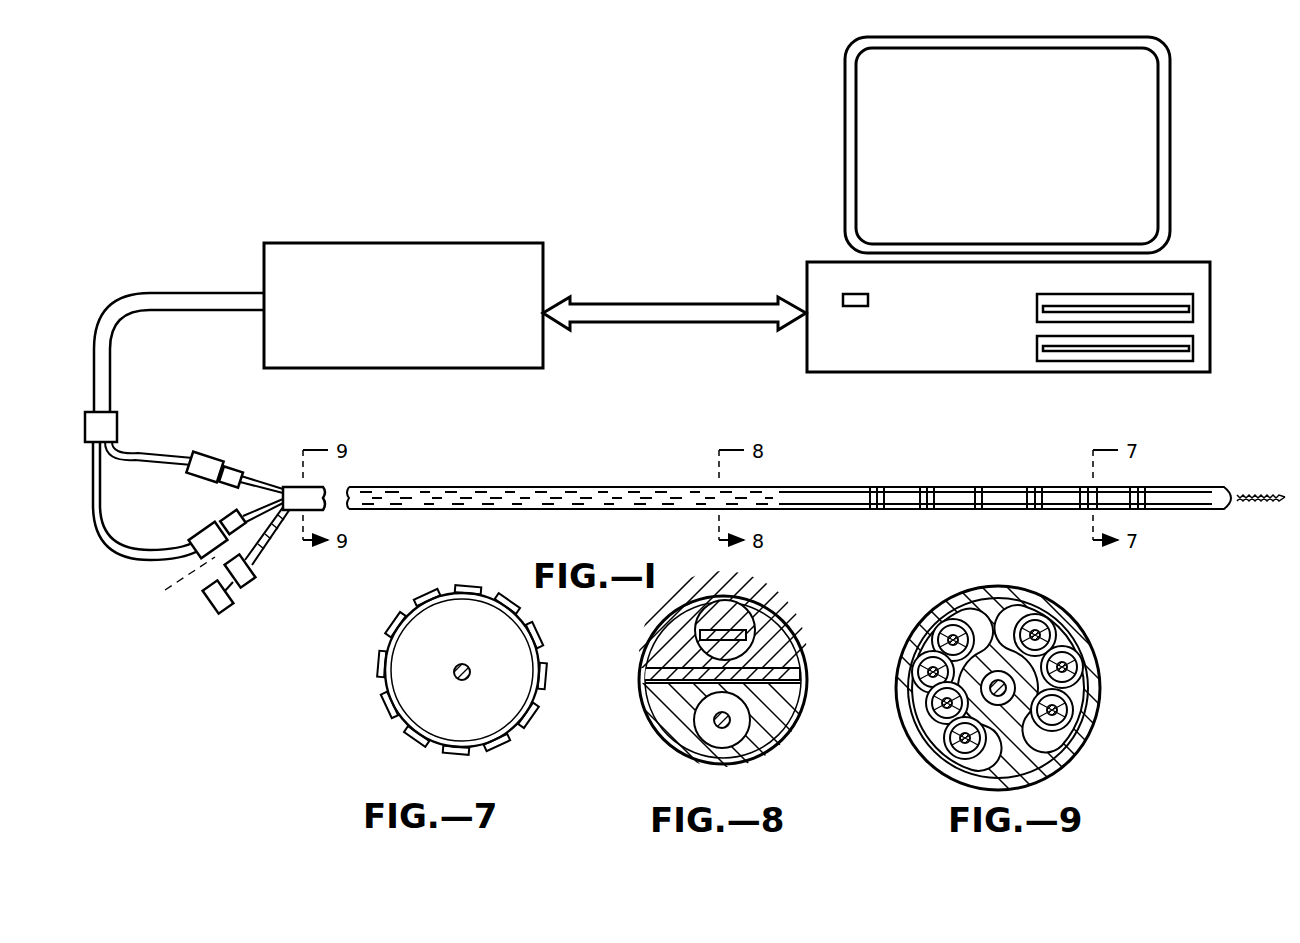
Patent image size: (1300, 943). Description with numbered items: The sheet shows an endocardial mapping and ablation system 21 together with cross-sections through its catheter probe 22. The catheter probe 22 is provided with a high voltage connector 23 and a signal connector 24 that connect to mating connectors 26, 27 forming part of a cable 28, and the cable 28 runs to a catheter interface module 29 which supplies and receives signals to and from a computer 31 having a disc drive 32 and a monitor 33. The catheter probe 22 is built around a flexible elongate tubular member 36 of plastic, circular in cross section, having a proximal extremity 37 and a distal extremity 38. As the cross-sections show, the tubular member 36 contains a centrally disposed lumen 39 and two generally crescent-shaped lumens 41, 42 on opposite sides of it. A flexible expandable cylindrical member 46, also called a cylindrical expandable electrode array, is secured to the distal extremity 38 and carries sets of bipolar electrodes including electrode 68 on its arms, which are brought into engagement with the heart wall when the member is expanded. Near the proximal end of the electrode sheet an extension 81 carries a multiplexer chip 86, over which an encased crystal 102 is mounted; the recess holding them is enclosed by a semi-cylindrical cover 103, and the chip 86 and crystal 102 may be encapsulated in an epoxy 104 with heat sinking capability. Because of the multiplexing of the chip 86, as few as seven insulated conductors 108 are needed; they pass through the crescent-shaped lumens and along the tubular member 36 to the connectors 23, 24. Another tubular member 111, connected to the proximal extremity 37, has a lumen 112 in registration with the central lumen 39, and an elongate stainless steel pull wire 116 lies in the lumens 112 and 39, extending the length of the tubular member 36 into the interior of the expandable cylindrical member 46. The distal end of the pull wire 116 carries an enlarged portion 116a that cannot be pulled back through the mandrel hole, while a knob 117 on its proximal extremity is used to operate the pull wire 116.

In FIG. 1, the endocardial mapping and ablation system 21 is at (388, 128).
In FIG. 1, the catheter probe 22 is at (789, 433).
In FIG. 1, the high voltage connector 23 is at (228, 470).
In FIG. 1, the signal connector 24 is at (222, 518).
In FIG. 1, the mating connector 26 is at (205, 458).
In FIG. 1, the mating connector 27 is at (200, 530).
In FIG. 1, the cable 28 is at (106, 370).
In FIG. 1, the catheter interface module 29 is at (295, 258).
In FIG. 1, the computer 31 is at (782, 97).
In FIG. 1, the disc drive 32 is at (1197, 282).
In FIG. 1, the monitor 33 is at (1145, 105).
In FIG. 1, the flexible elongate tubular member 36 is at (367, 483).
In FIG. 1, the proximal extremity 37 is at (297, 485).
In FIG. 9, the proximal extremity 37 is at (978, 592).
In FIG. 1, the distal extremity 38 is at (682, 487).
In FIG. 8, the central lumen 39 is at (694, 716).
In FIG. 9, the central lumen 39 is at (1015, 688).
In FIG. 8, the crescent-shaped lumen 41 is at (723, 680).
In FIG. 9, the crescent-shaped lumen 41 is at (915, 705).
In FIG. 9, the crescent-shaped lumen 42 is at (1068, 642).
In FIG. 1, the flexible expandable cylindrical member 46 is at (925, 486).
In FIG. 7, the bipolar electrode 68 is at (442, 596).
In FIG. 8, the extension 81 is at (800, 683).
In FIG. 8, the multiplexer chip 86 is at (680, 673).
In FIG. 8, the encased crystal 102 is at (770, 630).
In FIG. 8, the semi-cylindrical cover 103 is at (752, 600).
In FIG. 8, the epoxy 104 is at (780, 654).
In FIG. 9, the insulated conductors 108 is at (950, 630).
In FIG. 1, the tubular member 111 is at (280, 548).
In FIG. 1, the lumen 112 is at (165, 582).
In FIG. 1, the pull wire 116 is at (250, 584).
In FIG. 7, the pull wire 116 is at (455, 680).
In FIG. 8, the pull wire 116 is at (713, 722).
In FIG. 9, the pull wire 116 is at (1002, 700).
In FIG. 1, the enlarged portion 116a is at (1283, 497).
In FIG. 1, the knob 117 is at (215, 612).